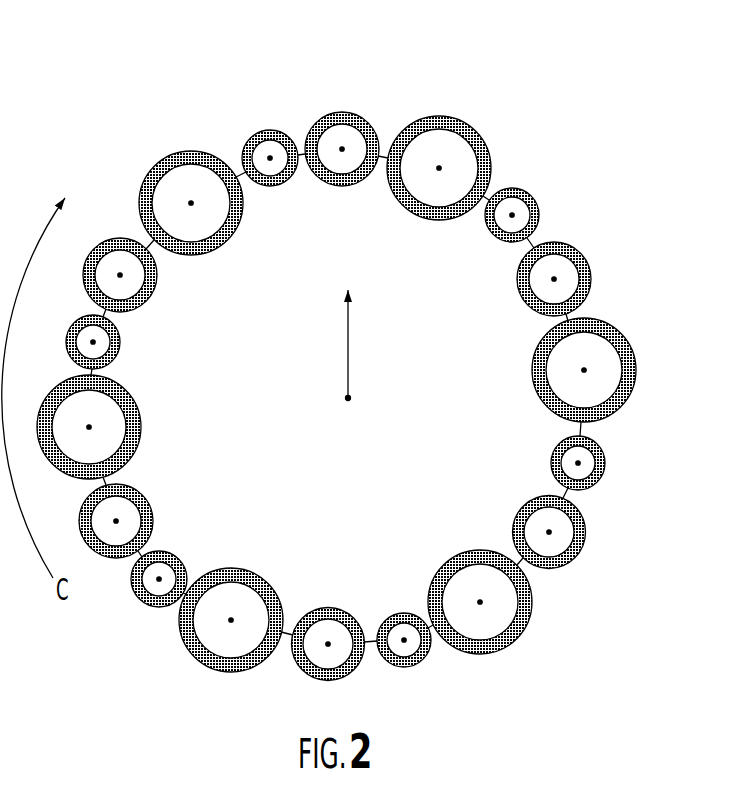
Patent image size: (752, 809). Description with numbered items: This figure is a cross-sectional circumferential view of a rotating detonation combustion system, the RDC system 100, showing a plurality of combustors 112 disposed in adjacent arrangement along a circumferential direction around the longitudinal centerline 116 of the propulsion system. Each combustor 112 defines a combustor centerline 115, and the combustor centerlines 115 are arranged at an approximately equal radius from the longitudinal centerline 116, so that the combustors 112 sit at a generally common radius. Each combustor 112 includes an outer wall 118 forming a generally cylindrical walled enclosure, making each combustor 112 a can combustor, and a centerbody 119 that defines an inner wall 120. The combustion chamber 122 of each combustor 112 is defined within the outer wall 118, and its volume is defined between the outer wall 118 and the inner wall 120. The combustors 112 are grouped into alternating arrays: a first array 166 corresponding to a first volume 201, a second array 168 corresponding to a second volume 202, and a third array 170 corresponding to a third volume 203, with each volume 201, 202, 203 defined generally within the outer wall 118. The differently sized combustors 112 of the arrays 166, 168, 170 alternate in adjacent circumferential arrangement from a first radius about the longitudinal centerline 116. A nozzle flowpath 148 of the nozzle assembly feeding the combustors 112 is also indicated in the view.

The RDC system 100 is at (517, 77).
The combustor 112 is at (535, 582).
The combustor centerline 115 is at (100, 432).
The longitudinal centerline 116 is at (345, 397).
The outer wall 118 is at (186, 193).
The centerbody 119 is at (458, 203).
The inner wall 120 is at (206, 172).
The combustion chamber 122 is at (478, 167).
The nozzle flowpath 148 is at (340, 112).
The first array 166 is at (512, 652).
The second array 168 is at (575, 575).
The third array 170 is at (595, 510).
The first volume 201 is at (245, 577).
The second volume 202 is at (337, 610).
The third volume 203 is at (405, 612).